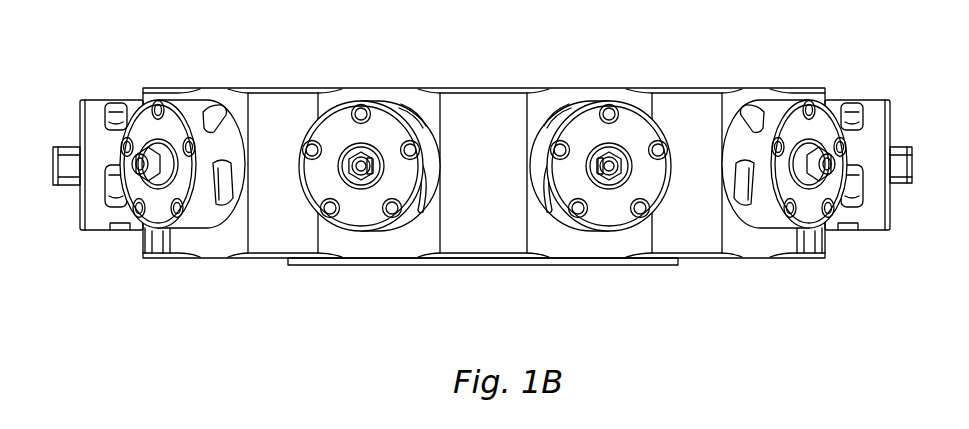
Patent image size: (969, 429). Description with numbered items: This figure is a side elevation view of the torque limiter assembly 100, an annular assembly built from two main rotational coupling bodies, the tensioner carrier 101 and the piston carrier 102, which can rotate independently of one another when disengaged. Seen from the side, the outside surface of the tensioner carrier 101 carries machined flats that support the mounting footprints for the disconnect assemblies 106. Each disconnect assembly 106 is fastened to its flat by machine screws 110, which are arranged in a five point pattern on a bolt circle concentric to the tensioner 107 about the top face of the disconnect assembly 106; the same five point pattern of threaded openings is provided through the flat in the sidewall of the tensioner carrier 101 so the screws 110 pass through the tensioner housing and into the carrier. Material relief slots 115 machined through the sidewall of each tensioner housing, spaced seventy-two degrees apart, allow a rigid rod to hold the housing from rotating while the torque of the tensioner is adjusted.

The torque limiter assembly 100 is at (512, 82).
The tensioner carrier 101 is at (296, 113).
The piston carrier 102 is at (790, 90).
The disconnect assembly 106 is at (566, 127).
The tensioner 107 is at (623, 143).
The machine screw 110 is at (324, 212).
The material relief slot 115 is at (738, 205).